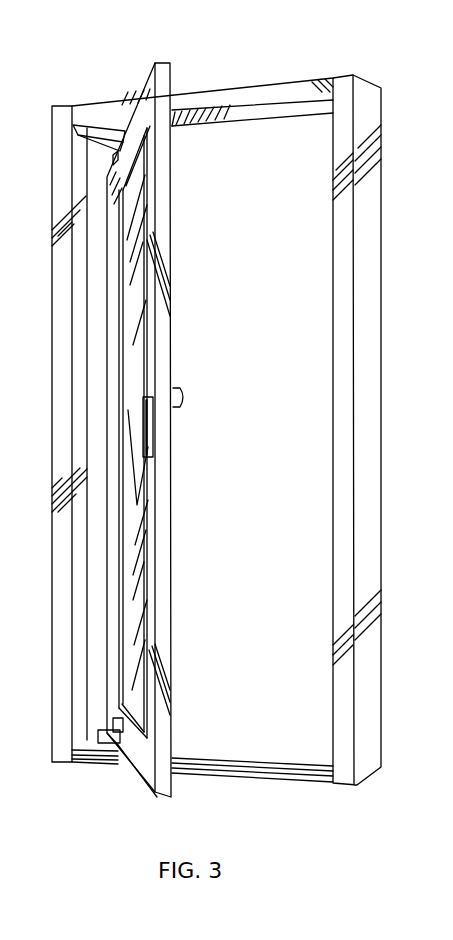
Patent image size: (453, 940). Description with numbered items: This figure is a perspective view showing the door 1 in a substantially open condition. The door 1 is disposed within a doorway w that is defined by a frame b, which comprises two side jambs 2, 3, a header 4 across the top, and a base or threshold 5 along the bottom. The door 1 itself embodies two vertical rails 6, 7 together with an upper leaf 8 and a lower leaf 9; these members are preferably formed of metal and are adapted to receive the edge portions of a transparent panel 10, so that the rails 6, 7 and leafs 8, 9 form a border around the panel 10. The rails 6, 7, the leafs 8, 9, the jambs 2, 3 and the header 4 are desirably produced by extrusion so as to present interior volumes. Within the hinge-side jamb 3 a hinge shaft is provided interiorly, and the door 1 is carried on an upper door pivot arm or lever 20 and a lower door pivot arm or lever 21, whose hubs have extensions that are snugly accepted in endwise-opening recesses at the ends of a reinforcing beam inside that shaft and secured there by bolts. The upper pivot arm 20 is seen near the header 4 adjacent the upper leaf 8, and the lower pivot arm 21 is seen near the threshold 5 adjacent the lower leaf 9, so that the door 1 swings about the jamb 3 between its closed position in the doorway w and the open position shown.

The door 1 is at (115, 327).
The side jamb 2 is at (375, 377).
The side jamb 3 is at (50, 343).
The header 4 is at (240, 85).
The base or threshold 5 is at (253, 777).
The vertical rail 6 is at (173, 717).
The vertical rail 7 is at (113, 383).
The upper leaf 8 is at (133, 131).
The lower leaf 9 is at (138, 760).
The transparent panel 10 is at (132, 288).
The upper door pivot arm or lever 20 is at (97, 153).
The lower door pivot arm or lever 21 is at (108, 747).
The doorway w is at (315, 285).
The frame b is at (372, 327).